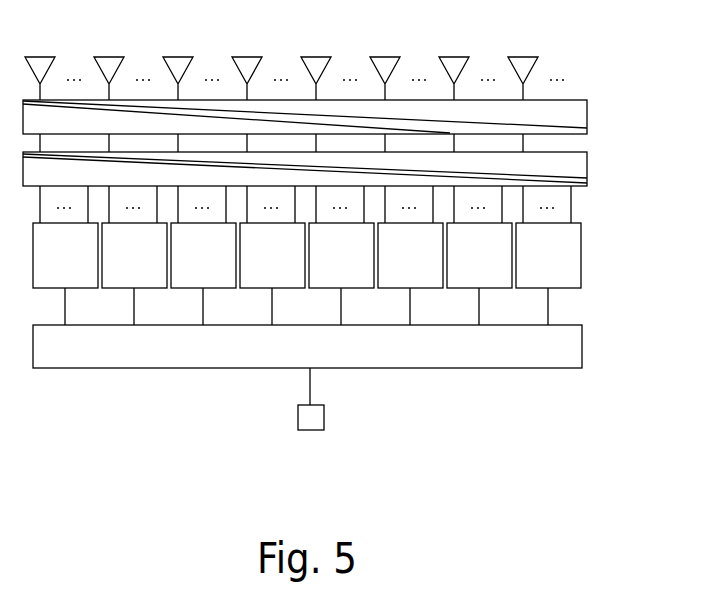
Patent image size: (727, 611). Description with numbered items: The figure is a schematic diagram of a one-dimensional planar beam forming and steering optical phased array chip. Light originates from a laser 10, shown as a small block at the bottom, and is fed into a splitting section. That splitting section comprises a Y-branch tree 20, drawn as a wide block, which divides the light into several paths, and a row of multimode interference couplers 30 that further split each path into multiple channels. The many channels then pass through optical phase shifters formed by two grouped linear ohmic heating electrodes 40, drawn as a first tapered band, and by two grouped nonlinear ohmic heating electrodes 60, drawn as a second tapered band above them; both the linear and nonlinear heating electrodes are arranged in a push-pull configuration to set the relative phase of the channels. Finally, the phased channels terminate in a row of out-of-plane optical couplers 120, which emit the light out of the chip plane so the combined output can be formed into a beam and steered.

The out-of-plane optical couplers 120 is at (547, 62).
The nonlinear ohmic heating electrodes 60 is at (595, 112).
The linear ohmic heating electrodes 40 is at (595, 171).
The multimode interference couplers 30 is at (587, 243).
The Y-branch tree 20 is at (587, 341).
The laser 10 is at (313, 435).